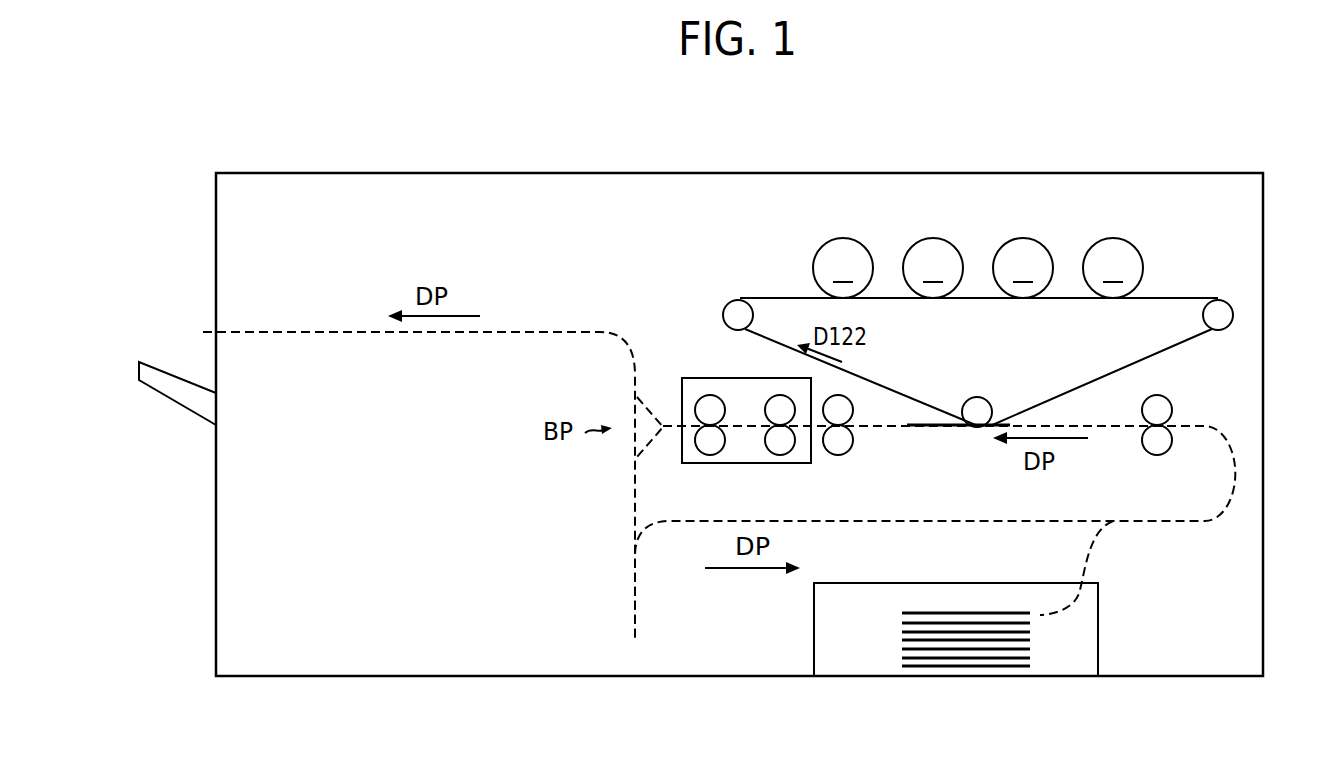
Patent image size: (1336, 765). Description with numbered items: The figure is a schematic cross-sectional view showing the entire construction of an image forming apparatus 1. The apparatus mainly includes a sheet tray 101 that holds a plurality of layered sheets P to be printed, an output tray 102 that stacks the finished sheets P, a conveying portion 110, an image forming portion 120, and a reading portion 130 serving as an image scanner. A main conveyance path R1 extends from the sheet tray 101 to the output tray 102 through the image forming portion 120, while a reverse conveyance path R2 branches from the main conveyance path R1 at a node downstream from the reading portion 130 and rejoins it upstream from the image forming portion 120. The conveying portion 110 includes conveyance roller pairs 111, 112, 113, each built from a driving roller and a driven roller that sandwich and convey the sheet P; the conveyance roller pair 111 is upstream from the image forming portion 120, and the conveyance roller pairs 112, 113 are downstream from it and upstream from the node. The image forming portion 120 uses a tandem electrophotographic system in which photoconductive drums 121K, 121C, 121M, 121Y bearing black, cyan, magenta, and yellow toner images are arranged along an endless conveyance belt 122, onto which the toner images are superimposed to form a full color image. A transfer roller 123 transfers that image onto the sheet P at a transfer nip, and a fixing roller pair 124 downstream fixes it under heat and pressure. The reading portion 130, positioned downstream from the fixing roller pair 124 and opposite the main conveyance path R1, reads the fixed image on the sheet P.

The image forming apparatus 1 is at (1222, 173).
The sheet tray 101 is at (1083, 665).
The output tray 102 is at (156, 363).
The conveying portion 110 is at (1146, 561).
The conveyance roller pair 111 is at (1138, 422).
The conveyance roller pair 112 is at (762, 422).
The conveyance roller pair 113 is at (690, 422).
The image forming portion 120 is at (978, 309).
The photoconductive drum 121K is at (816, 248).
The photoconductive drum 121C is at (905, 248).
The photoconductive drum 121M is at (995, 248).
The photoconductive drum 121Y is at (1085, 248).
The conveyance belt 122 is at (1067, 393).
The transfer roller 123 is at (980, 396).
The fixing roller pair 124 is at (853, 398).
The reading portion 130 is at (725, 414).
The sheet P is at (940, 430).
The main conveyance path R1 is at (1205, 430).
The reverse conveyance path R2 is at (636, 618).